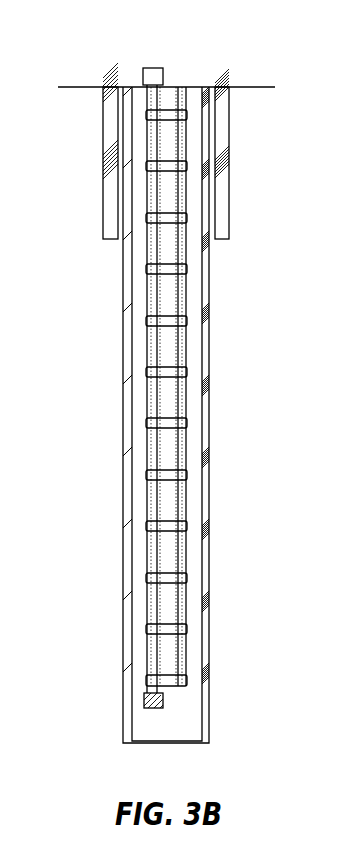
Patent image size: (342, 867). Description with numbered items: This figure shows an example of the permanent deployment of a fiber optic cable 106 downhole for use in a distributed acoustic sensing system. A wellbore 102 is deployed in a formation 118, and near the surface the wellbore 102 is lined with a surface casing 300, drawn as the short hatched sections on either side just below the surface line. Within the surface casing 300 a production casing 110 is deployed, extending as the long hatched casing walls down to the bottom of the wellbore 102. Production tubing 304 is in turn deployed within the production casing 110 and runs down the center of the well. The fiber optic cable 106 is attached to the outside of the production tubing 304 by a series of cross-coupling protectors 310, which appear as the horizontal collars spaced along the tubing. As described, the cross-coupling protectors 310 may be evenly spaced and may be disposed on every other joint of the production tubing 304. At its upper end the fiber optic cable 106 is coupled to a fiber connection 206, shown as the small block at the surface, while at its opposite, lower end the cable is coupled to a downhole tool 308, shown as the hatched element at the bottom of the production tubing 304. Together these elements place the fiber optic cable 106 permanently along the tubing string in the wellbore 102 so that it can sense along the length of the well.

The wellbore 102 is at (109, 314).
The fiber optic cable 106 is at (146, 421).
The production casing 110 is at (210, 295).
The formation 118 is at (278, 377).
The fiber connection 206 is at (163, 73).
The surface casing 300 is at (229, 163).
The production tubing 304 is at (186, 595).
The downhole tool 308 is at (143, 697).
The cross-coupling protectors 310 is at (146, 528).